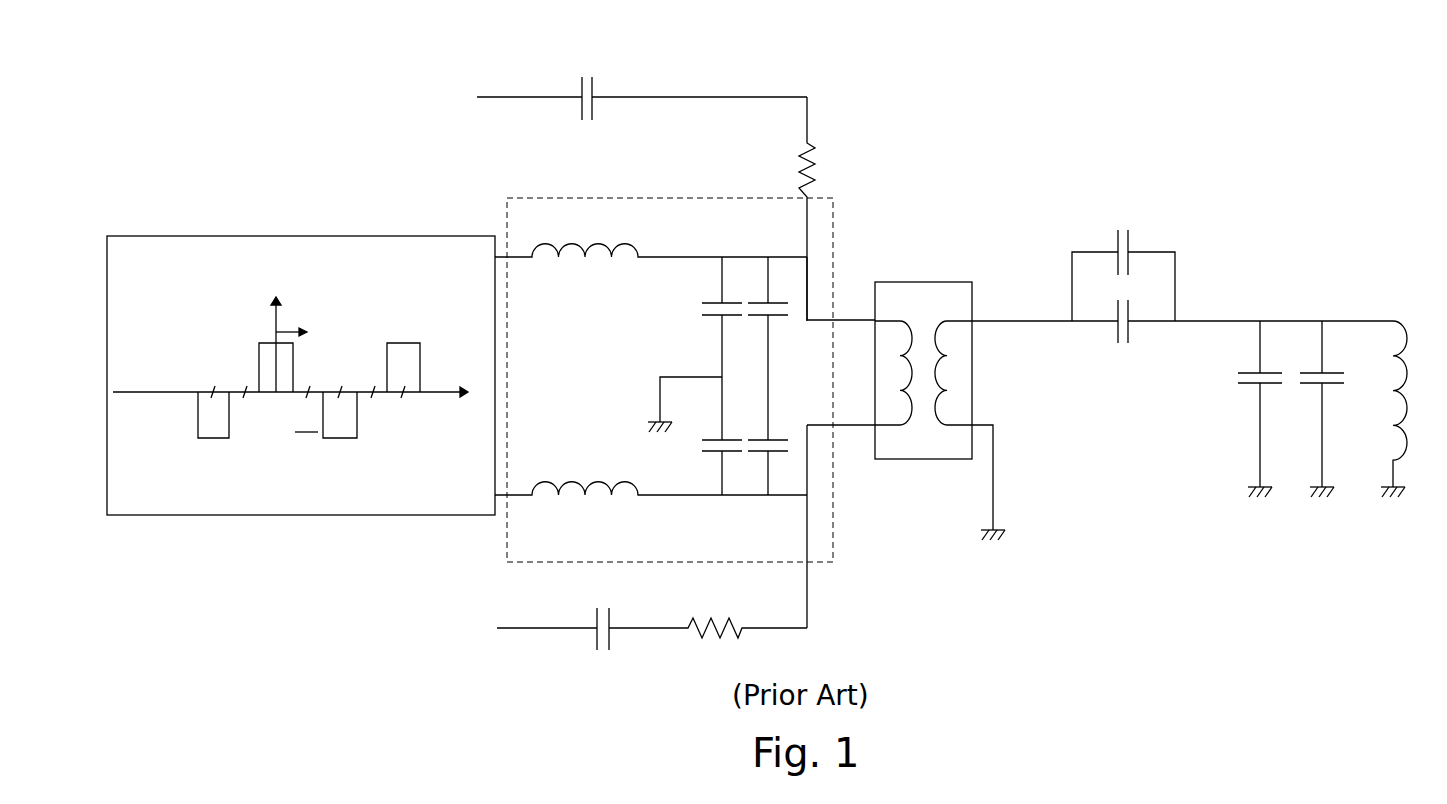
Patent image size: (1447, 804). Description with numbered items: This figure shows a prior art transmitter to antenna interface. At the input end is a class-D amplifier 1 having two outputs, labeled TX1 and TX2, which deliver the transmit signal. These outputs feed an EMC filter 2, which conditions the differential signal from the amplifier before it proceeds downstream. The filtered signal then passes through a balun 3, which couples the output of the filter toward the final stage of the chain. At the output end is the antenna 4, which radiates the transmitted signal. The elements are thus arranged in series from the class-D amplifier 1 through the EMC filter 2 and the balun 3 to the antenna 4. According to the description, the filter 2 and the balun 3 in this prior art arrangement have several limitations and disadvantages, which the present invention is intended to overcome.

The class-D amplifier 1 is at (170, 236).
The EMC filter 2 is at (504, 200).
The balun 3 is at (905, 282).
The antenna 4 is at (1395, 320).